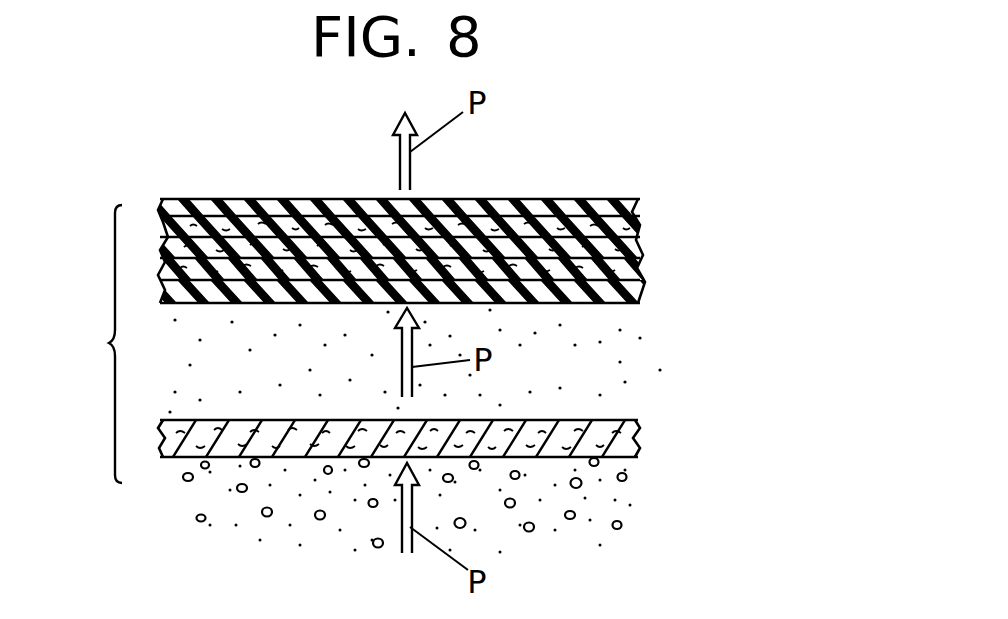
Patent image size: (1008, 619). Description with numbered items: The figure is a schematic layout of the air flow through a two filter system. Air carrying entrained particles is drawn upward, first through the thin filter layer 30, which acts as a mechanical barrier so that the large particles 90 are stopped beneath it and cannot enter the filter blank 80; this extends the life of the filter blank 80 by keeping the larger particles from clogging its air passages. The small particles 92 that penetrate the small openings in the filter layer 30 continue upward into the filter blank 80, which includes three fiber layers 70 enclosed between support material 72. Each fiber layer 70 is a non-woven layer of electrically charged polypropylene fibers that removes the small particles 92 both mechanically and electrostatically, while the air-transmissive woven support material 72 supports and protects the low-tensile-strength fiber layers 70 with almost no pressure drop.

The filter blank 80 is at (458, 220).
The support material 72 is at (603, 208).
The fiber layer 70 is at (640, 267).
The filter layer 30 is at (645, 432).
The small particles 92 is at (195, 350).
The large particles 90 is at (370, 507).